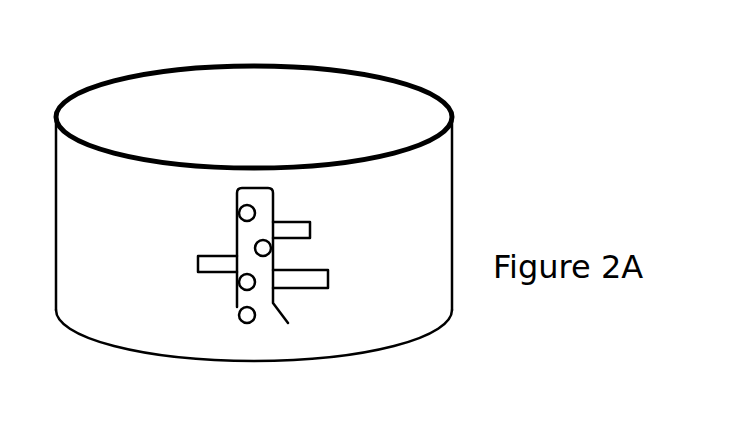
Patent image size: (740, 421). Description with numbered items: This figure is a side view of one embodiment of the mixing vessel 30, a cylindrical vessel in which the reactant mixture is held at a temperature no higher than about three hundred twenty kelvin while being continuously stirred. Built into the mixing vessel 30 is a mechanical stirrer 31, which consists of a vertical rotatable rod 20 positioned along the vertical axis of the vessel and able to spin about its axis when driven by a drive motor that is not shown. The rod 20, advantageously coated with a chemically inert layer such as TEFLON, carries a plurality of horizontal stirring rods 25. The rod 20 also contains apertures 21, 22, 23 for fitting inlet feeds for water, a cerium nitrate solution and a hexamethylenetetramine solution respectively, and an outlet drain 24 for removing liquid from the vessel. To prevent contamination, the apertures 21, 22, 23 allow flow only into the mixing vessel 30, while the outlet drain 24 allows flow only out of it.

The vertical rotatable rod 20 is at (274, 188).
The aperture 21 is at (230, 205).
The aperture 22 is at (246, 240).
The aperture 23 is at (230, 289).
The outlet drain 24 is at (229, 322).
The horizontal stirring rods 25 is at (198, 268).
The mixing vessel 30 is at (462, 196).
The mechanical stirrer 31 is at (286, 194).